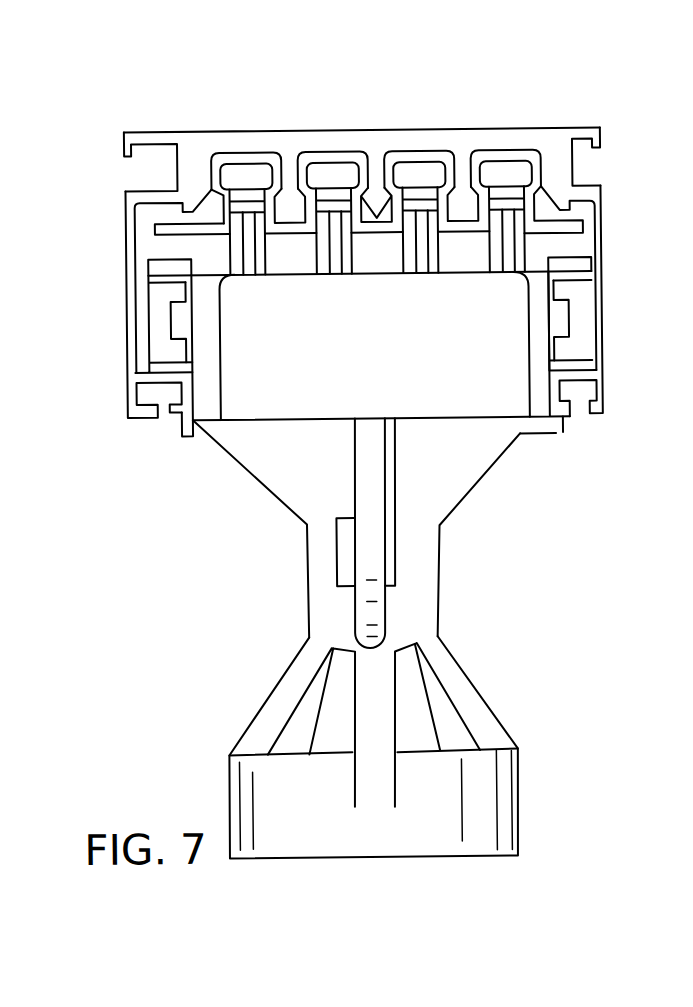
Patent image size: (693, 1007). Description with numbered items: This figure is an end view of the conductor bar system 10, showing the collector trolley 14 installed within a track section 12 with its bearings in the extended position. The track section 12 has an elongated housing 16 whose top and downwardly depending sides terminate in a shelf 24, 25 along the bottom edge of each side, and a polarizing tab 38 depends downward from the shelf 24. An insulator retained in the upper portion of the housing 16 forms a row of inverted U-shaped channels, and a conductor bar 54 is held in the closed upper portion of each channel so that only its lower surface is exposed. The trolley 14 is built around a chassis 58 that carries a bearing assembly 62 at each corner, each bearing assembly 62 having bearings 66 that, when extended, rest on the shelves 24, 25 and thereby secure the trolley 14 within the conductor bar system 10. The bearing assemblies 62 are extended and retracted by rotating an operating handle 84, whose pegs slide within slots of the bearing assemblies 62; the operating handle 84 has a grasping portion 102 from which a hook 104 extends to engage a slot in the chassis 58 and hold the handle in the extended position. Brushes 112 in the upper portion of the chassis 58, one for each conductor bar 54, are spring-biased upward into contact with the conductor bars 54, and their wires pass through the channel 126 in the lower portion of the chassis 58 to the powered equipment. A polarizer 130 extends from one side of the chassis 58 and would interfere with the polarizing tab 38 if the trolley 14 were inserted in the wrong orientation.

The conductor bar system 10 is at (158, 538).
The track section 12 is at (114, 152).
The trolley 14 is at (220, 668).
The housing 16 is at (609, 178).
The shelf 24 is at (160, 391).
The shelf 25 is at (577, 382).
The polarizing tab 38 is at (183, 435).
The conductor bar 54 is at (334, 164).
The chassis 58 is at (390, 396).
The bearing assembly 62 is at (170, 295).
The bearing 66 is at (166, 348).
The operating handle 84 is at (379, 477).
The grasping portion 102 is at (362, 500).
The hook 104 is at (342, 563).
The brush 112 is at (254, 274).
The channel 126 is at (330, 819).
The polarizer 130 is at (554, 422).